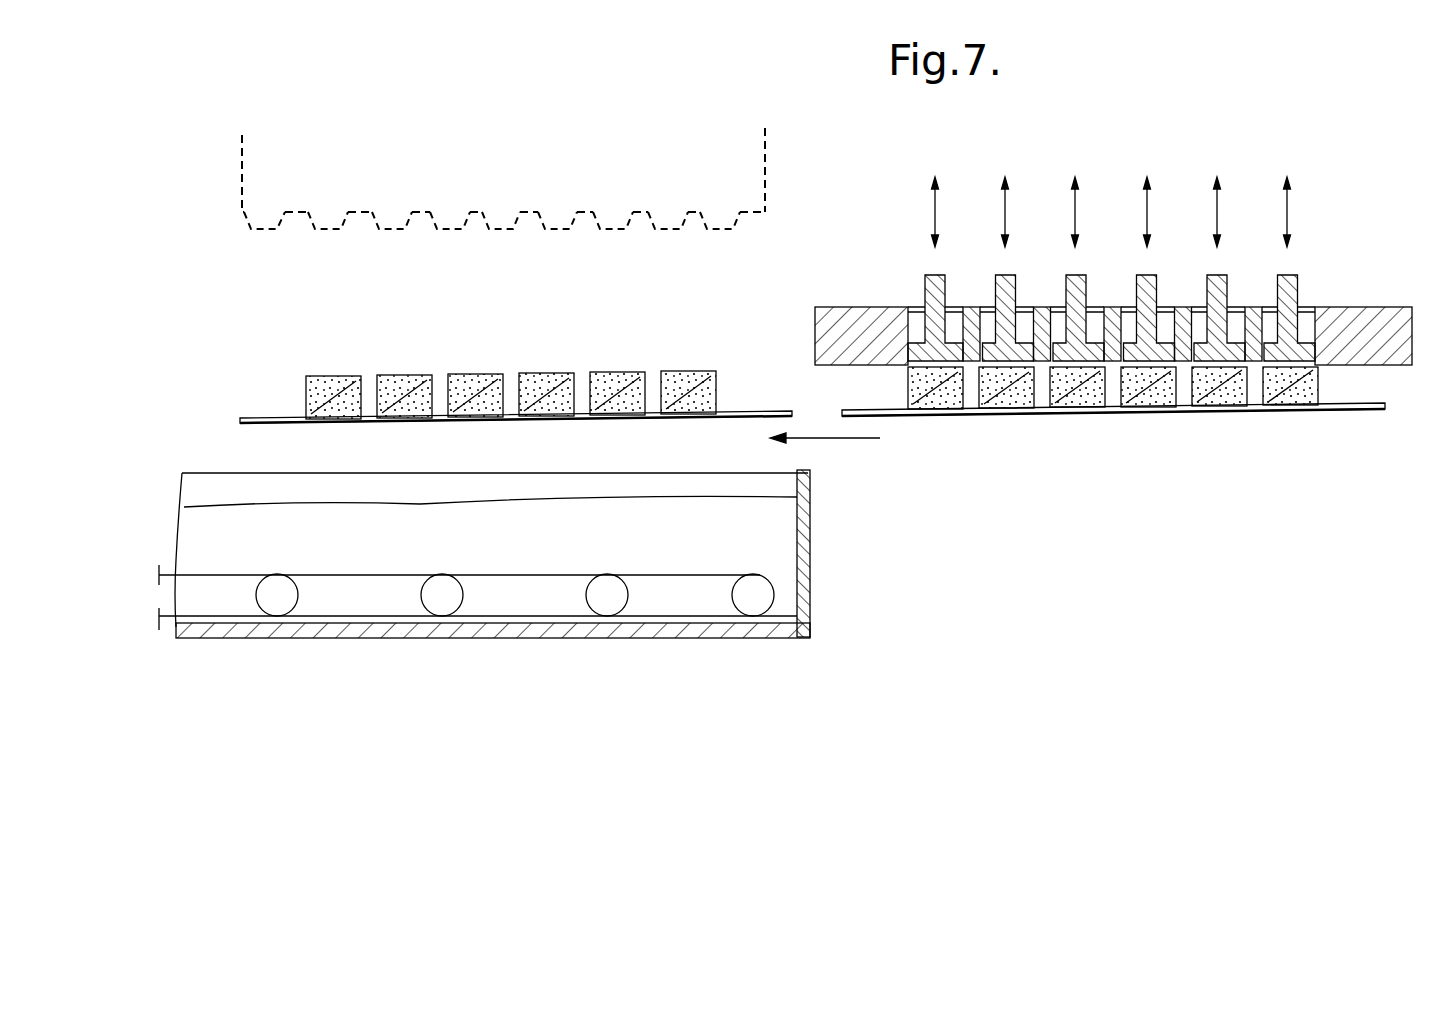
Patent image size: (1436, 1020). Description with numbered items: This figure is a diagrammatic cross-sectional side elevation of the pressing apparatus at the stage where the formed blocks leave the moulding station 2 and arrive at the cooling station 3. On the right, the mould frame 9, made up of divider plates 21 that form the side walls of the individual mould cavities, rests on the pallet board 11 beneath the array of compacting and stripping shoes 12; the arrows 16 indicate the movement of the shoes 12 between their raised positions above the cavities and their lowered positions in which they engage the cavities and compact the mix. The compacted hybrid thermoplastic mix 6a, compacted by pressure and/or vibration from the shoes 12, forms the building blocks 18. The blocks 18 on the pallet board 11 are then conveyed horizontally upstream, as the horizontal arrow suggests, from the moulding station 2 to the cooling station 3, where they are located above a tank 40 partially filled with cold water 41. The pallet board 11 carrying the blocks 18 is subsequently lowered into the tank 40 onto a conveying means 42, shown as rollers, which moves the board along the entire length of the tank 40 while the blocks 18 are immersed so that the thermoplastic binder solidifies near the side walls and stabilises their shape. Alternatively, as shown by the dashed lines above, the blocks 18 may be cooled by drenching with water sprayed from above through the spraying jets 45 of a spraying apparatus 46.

The moulding station 2 is at (1300, 420).
The cooling station 3 is at (406, 647).
The compacted hybrid thermoplastic mix 6a is at (410, 384).
The mould frame 9 is at (850, 318).
The pallet board 11 is at (763, 410).
The shoes 12 is at (1080, 275).
The arrows 16 is at (1003, 208).
The building blocks 18 is at (488, 384).
The divider plates 21 is at (968, 320).
The tank 40 is at (812, 598).
The cold water 41 is at (518, 555).
The conveying means 42 is at (562, 600).
The spraying jets 45 is at (492, 226).
The spraying apparatus 46 is at (533, 181).